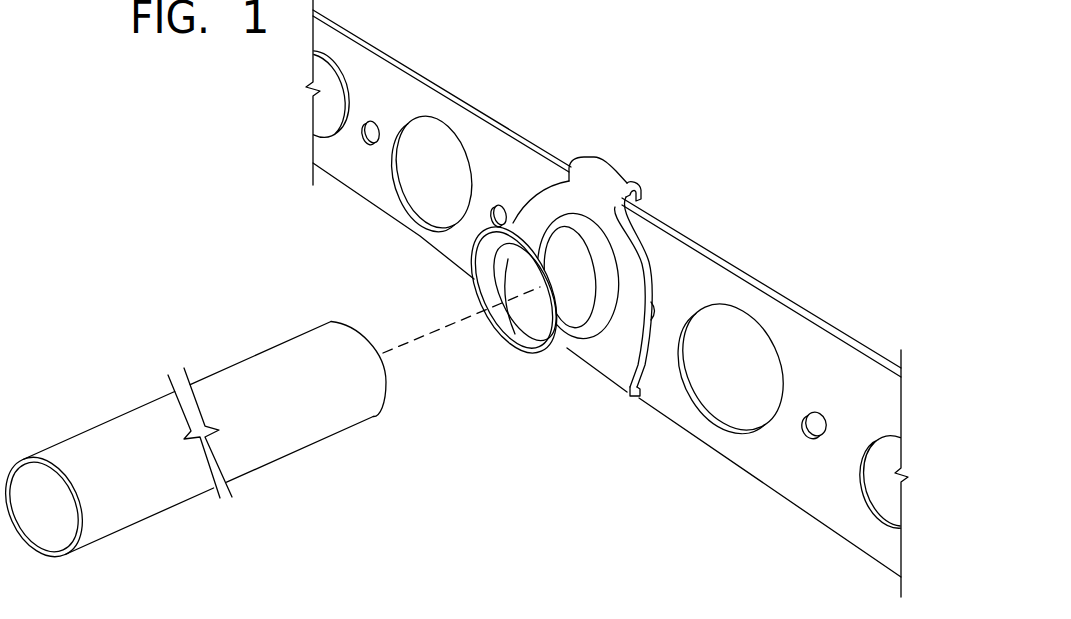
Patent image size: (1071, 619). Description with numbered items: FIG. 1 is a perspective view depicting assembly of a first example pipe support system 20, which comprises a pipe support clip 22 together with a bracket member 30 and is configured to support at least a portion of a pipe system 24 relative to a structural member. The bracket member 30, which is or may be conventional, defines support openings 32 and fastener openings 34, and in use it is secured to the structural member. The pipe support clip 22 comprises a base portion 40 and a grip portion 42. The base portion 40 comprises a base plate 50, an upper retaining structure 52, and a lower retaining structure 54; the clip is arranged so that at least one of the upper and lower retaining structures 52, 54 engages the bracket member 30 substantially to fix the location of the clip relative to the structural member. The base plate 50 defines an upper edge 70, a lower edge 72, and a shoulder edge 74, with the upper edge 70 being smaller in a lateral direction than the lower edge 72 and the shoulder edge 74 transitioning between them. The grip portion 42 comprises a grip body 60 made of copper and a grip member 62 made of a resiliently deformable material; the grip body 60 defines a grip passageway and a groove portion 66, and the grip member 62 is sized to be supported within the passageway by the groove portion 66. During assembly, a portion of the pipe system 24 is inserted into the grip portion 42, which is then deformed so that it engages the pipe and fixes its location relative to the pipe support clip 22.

The pipe support system 20 is at (209, 159).
The pipe support clip 22 is at (589, 143).
The pipe system 24 is at (130, 391).
The bracket member 30 is at (452, 77).
The support openings 32 is at (448, 150).
The fastener openings 34 is at (374, 121).
The base portion 40 is at (663, 281).
The grip portion 42 is at (496, 353).
The base plate 50 is at (614, 348).
The upper retaining structure 52 is at (613, 180).
The lower retaining structure 54 is at (600, 378).
The grip body 60 is at (545, 350).
The grip member 62 is at (503, 278).
The groove portion 66 is at (552, 350).
The upper edge 70 is at (632, 200).
The lower edge 72 is at (643, 357).
The shoulder edge 74 is at (650, 262).